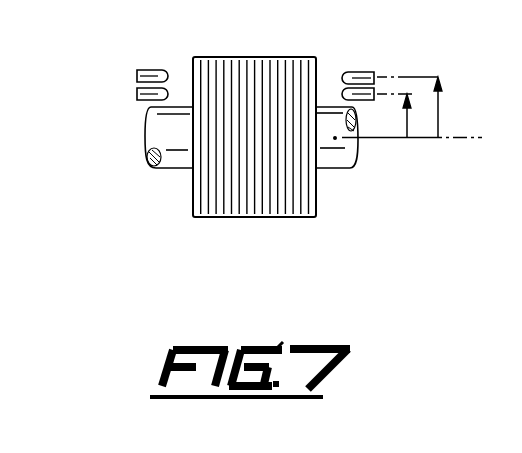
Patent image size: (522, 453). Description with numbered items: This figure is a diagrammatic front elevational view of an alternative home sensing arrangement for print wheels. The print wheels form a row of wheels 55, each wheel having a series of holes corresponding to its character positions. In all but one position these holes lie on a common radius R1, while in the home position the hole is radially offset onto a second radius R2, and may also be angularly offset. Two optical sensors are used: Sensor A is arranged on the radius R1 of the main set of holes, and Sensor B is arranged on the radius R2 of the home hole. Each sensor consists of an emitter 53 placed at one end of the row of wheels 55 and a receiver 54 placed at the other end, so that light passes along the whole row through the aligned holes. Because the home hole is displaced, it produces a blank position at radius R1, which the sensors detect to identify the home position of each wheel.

The emitter 53 is at (107, 82).
The receiver 54 is at (354, 71).
The row of wheels 55 is at (233, 217).
The Sensor A is at (152, 70).
The Sensor B is at (147, 100).
The radius R1 is at (438, 128).
The radius R2 is at (407, 128).